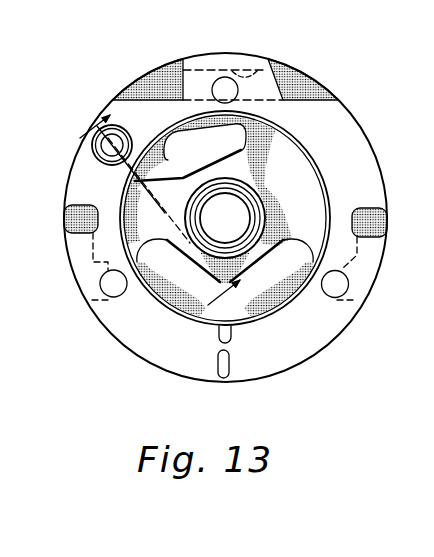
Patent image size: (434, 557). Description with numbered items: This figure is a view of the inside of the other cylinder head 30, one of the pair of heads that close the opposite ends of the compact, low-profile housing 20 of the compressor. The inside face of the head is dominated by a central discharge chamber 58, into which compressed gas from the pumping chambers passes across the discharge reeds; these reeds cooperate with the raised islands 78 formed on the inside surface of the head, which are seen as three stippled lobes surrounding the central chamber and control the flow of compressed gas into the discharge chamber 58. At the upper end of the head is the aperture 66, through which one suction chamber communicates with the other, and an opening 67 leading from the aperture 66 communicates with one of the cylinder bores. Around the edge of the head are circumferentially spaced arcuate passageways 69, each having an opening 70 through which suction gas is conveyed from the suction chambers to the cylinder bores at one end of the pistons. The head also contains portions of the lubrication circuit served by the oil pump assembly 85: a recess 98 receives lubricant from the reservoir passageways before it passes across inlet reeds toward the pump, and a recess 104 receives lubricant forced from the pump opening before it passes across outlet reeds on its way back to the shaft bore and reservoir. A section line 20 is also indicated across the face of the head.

The housing 20 is at (155, 208).
The cylinder head 30 is at (327, 348).
The discharge chamber 58 is at (303, 201).
The aperture 66 is at (246, 70).
The opening 67 is at (228, 86).
The arcuate passageways 69 is at (62, 222).
The opening 70 is at (106, 287).
The raised islands 78 is at (232, 139).
The oil pump assembly 85 is at (124, 135).
The recess 98 is at (229, 366).
The recess 104 is at (218, 337).